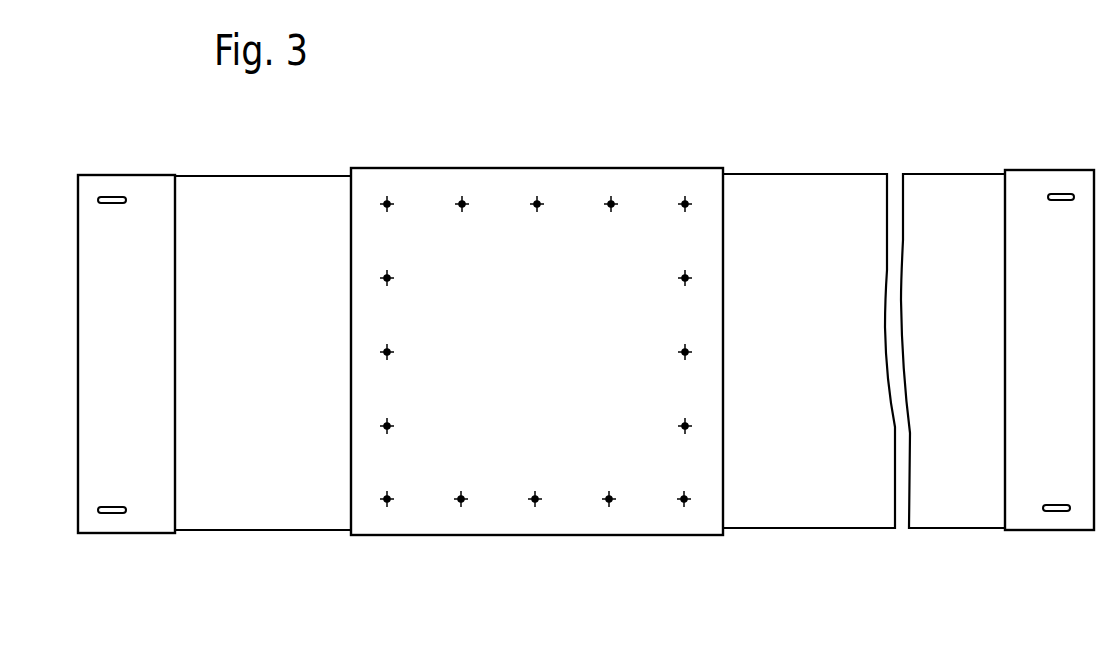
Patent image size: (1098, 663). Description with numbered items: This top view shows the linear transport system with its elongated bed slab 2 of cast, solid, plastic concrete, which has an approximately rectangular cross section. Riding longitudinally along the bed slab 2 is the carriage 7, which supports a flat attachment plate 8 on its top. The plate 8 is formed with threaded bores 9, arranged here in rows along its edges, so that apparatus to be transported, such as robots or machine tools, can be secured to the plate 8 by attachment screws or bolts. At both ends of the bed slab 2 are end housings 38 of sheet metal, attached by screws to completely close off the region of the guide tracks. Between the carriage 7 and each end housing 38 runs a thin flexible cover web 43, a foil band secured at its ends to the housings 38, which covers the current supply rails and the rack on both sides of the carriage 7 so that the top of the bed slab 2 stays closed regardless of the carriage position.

The bed slab 2 is at (590, 410).
The carriage 7 is at (539, 355).
The attachment plate 8 is at (637, 193).
The threaded bores 9 is at (463, 203).
The end housings 38 is at (147, 516).
The cover web 43 is at (987, 364).